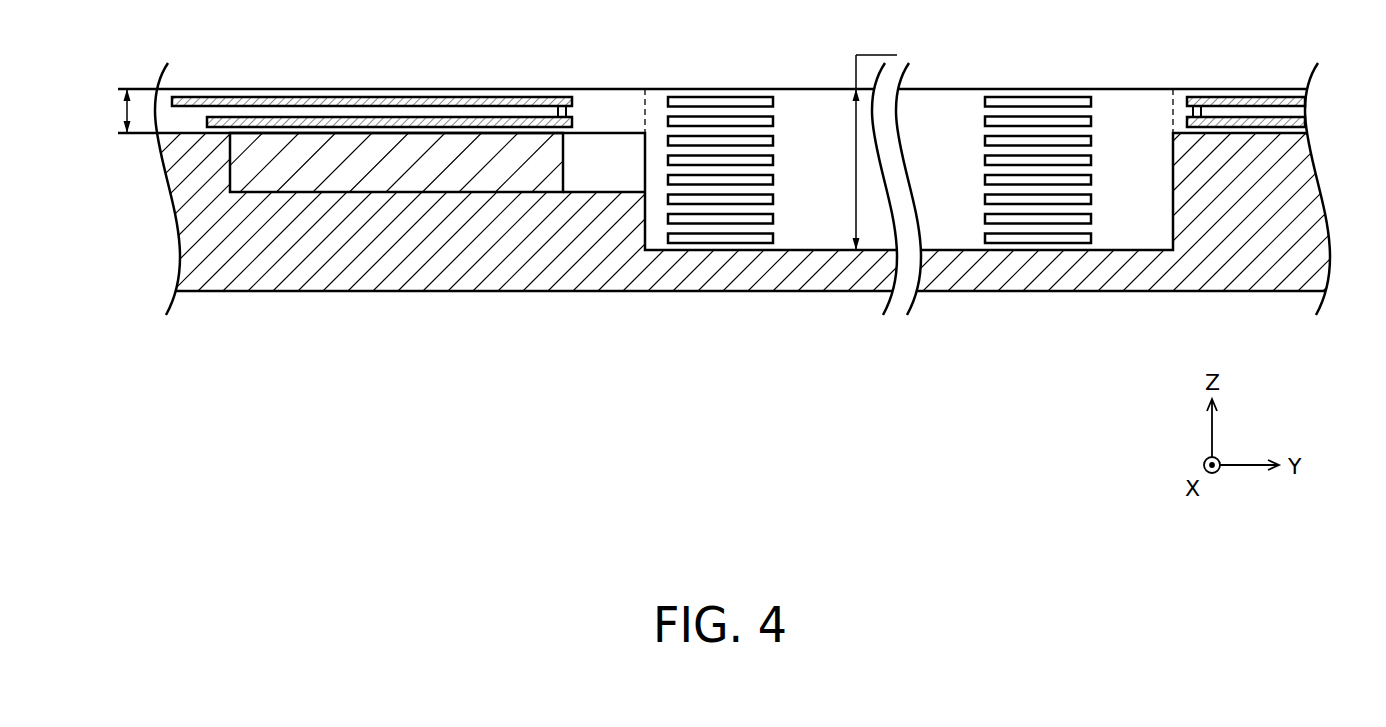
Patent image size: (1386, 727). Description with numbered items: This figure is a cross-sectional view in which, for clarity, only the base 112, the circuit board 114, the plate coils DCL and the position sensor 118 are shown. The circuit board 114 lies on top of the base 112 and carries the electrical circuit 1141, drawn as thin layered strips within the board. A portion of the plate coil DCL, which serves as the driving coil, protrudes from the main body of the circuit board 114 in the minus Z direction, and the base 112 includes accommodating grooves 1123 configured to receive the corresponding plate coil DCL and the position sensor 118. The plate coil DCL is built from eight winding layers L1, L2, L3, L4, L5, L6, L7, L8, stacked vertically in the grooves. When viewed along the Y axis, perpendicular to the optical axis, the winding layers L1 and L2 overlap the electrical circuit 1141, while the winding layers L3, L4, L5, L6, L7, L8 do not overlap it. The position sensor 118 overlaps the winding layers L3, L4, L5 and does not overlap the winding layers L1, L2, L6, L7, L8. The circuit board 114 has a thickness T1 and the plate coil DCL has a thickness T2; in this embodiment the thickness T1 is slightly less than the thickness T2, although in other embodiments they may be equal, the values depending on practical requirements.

The base 112 is at (208, 242).
The accommodating groove 1123 is at (232, 157).
The circuit board 114 is at (741, 104).
The electrical circuit 1141 is at (287, 96).
The position sensor 118 is at (371, 168).
The plate coil DCL is at (737, 86).
The winding layer L1 is at (775, 103).
The winding layer L2 is at (985, 122).
The winding layer L3 is at (775, 141).
The winding layer L4 is at (985, 161).
The winding layer L5 is at (775, 180).
The winding layer L6 is at (985, 200).
The winding layer L7 is at (775, 219).
The winding layer L8 is at (985, 239).
The thickness of the circuit board T1 is at (108, 111).
The thickness of the plate coil T2 is at (875, 139).